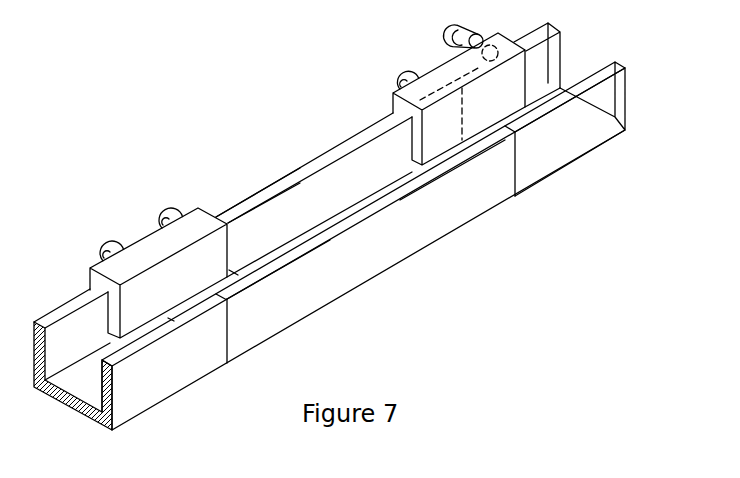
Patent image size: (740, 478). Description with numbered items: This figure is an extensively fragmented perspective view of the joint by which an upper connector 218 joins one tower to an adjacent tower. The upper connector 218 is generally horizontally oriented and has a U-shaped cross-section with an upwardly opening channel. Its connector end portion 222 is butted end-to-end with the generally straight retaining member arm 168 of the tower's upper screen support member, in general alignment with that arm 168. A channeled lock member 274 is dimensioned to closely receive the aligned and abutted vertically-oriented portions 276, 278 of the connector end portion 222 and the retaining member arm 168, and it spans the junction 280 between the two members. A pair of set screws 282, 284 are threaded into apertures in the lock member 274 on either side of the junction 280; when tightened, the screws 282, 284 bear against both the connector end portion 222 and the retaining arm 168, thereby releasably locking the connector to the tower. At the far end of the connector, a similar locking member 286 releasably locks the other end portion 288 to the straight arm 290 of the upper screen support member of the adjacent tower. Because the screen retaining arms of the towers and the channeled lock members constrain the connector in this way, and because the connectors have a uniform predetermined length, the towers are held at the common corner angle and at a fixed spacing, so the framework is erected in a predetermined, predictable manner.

The arm 168 is at (73, 405).
The upper connector 218 is at (363, 259).
The connector end portion 222 is at (246, 329).
The channeled lock member 274 is at (157, 245).
The vertically-oriented portion 276 is at (232, 204).
The vertically-oriented portion 278 is at (75, 293).
The junction 280 is at (229, 337).
The set screw 282 is at (170, 209).
The set screw 284 is at (106, 247).
The locking member 286 is at (440, 83).
The other end portion 288 is at (487, 187).
The straight arm 290 is at (583, 135).